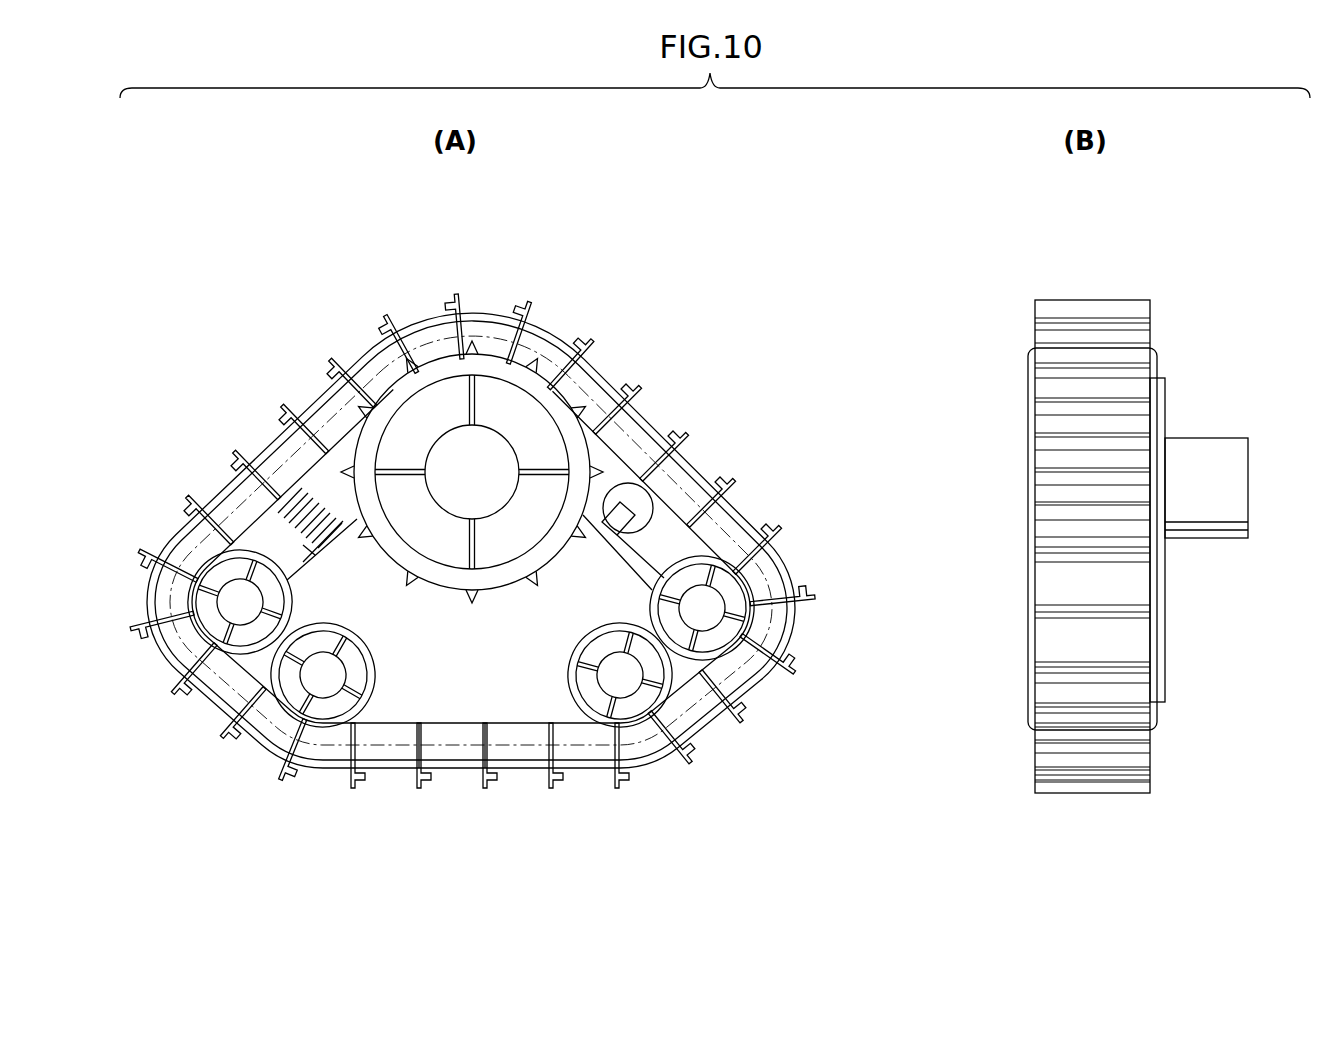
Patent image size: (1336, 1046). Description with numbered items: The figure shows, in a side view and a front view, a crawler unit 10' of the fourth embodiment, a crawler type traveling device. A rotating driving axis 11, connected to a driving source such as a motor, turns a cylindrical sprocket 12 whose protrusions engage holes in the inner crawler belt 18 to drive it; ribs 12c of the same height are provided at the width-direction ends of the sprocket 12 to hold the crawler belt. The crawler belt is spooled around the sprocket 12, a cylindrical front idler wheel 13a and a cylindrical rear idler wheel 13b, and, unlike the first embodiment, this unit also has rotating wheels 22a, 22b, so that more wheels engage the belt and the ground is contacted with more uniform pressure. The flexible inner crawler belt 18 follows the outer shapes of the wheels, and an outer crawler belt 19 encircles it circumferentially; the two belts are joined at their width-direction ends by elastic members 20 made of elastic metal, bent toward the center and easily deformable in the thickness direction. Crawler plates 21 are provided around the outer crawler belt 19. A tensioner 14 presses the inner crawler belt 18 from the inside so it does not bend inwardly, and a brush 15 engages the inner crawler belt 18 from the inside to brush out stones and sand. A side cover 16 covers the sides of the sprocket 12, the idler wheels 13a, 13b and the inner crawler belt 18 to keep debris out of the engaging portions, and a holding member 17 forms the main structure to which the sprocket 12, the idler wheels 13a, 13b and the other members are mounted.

The crawler unit 10' is at (711, 516).
The rotating driving axis 11 is at (1217, 452).
The sprocket 12 is at (494, 392).
The ribs 12c is at (574, 402).
The front idler wheel 13a is at (718, 565).
The rear idler wheel 13b is at (195, 548).
The tensioner 14 is at (633, 483).
The brush 15 is at (288, 455).
The side cover 16 is at (520, 748).
The holding member 17 is at (1162, 627).
The inner crawler belt 18 is at (323, 425).
The outer crawler belt 19 is at (392, 340).
The elastic members 20 is at (483, 750).
The crawler plates 21 is at (518, 312).
The rotating wheel 22a is at (604, 705).
The rotating wheel 22b is at (332, 712).